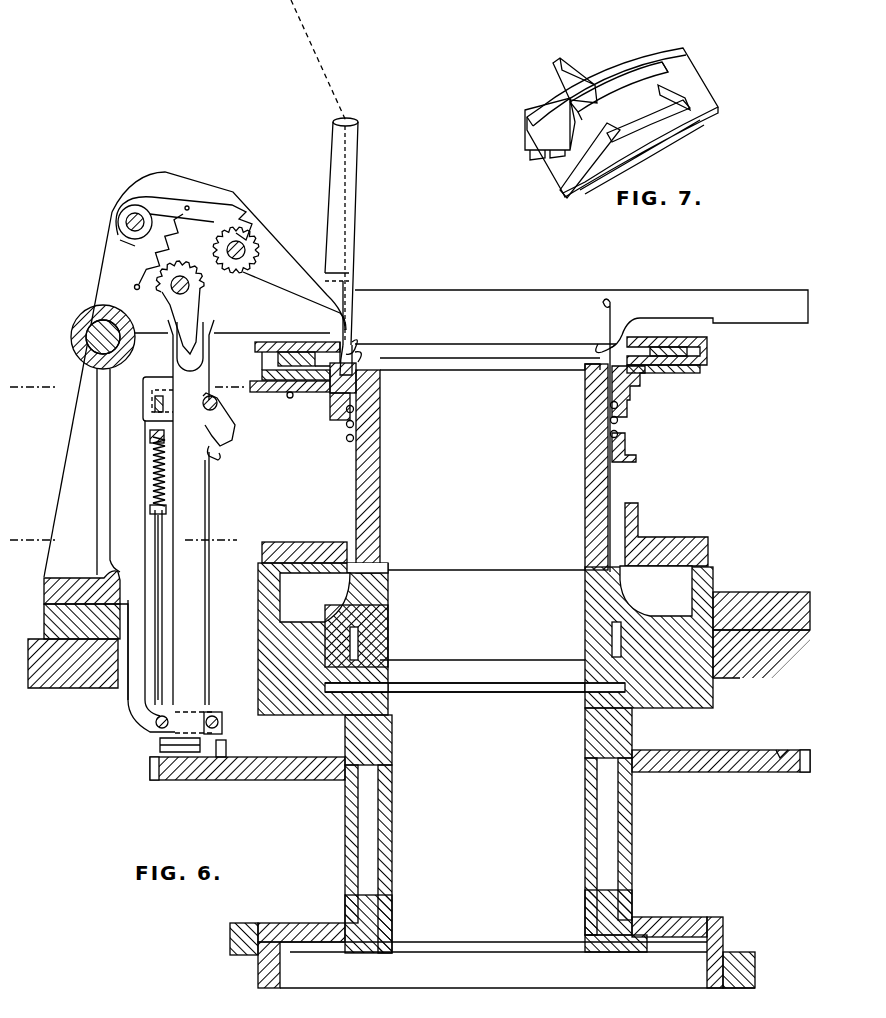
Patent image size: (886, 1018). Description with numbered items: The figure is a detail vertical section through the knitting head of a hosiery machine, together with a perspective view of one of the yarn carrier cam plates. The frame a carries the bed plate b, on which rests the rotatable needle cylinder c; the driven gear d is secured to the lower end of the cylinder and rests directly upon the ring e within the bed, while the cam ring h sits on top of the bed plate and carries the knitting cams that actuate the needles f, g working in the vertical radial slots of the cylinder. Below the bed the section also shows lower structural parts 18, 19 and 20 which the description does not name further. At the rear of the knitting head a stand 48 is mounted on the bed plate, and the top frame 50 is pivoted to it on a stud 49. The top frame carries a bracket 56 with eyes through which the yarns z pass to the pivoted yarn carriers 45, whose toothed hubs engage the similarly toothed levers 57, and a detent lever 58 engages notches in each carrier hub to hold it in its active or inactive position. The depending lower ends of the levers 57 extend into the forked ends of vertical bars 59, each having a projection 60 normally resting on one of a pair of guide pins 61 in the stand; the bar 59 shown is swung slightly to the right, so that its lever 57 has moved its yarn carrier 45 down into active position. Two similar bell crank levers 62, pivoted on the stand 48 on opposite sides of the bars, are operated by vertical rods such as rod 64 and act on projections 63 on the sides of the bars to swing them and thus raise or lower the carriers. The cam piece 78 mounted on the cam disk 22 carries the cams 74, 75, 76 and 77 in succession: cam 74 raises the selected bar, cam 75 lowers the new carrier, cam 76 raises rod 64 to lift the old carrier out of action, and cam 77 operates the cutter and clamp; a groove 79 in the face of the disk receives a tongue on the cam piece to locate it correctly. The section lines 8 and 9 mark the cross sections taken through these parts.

In FIG. 6, the yarns z is at (345, 44).
In FIG. 6, the bracket 56 is at (356, 195).
In FIG. 6, the yarn carrier 45 is at (277, 262).
In FIG. 6, the detent lever 58 is at (170, 193).
In FIG. 6, the toothed lever 57 is at (193, 316).
In FIG. 6, the vertical bar 59 is at (194, 622).
In FIG. 6, the stud 49 is at (85, 330).
In FIG. 6, the bell crank lever 62 is at (227, 430).
In FIG. 6, the projection 63 is at (225, 455).
In FIG. 6, the vertical rod 64 is at (157, 546).
In FIG. 6, the section line 9— 9 is at (128, 375).
In FIG. 6, the section line 8— 8 is at (126, 529).
In FIG. 6, the stand 48 is at (80, 577).
In FIG. 6, the needle f is at (362, 344).
In FIG. 6, the top frame 50 is at (655, 290).
In FIG. 6, the needle cylinder c is at (585, 526).
In FIG. 6, the needle g is at (606, 325).
In FIG. 6, the cam ring h is at (665, 537).
In FIG. 6, the driven gear d is at (360, 656).
In FIG. 6, the ring e is at (380, 675).
In FIG. 6, the bed plate b is at (740, 592).
In FIG. 6, the frame a is at (750, 672).
In FIG. 6, the lower wall 18 is at (345, 855).
In FIG. 6, the block 20 is at (230, 934).
In FIG. 6, the base plate 19 is at (258, 980).
In FIG. 6, the cam disk 22 is at (700, 750).
In FIG. 6, the groove 79 is at (784, 750).
In FIG. 6, the projection 60 is at (208, 712).
In FIG. 6, the guide pin 61 is at (222, 722).
In FIG. 6, the cam 74 is at (165, 748).
In FIG. 7, the cam 74 is at (526, 128).
In FIG. 6, the cam 77 is at (218, 760).
In FIG. 7, the cam 77 is at (570, 165).
In FIG. 6, the cam piece 78 is at (168, 780).
In FIG. 7, the cam piece 78 is at (672, 52).
In FIG. 7, the cam 76 is at (548, 82).
In FIG. 7, the cam 75 is at (690, 96).